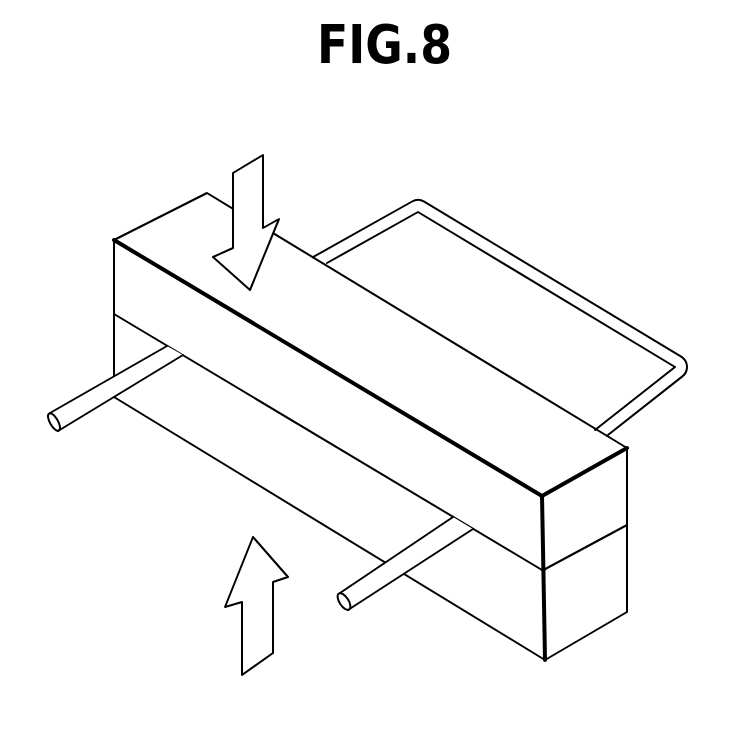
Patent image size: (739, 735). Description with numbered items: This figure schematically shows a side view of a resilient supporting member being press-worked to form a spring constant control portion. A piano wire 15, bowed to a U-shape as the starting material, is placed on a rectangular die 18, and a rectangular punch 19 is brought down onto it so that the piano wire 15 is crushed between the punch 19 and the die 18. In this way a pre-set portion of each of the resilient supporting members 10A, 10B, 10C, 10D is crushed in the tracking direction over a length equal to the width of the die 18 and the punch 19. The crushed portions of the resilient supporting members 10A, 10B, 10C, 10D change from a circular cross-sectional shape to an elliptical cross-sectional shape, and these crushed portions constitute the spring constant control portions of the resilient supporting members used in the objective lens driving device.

The resilient supporting member 10A is at (392, 604).
The resilient supporting member 10B is at (370, 587).
The resilient supporting member 10C is at (116, 435).
The resilient supporting member 10D is at (85, 405).
The piano wire 15 is at (553, 282).
The rectangular die 18 is at (590, 603).
The rectangular punch 19 is at (172, 235).